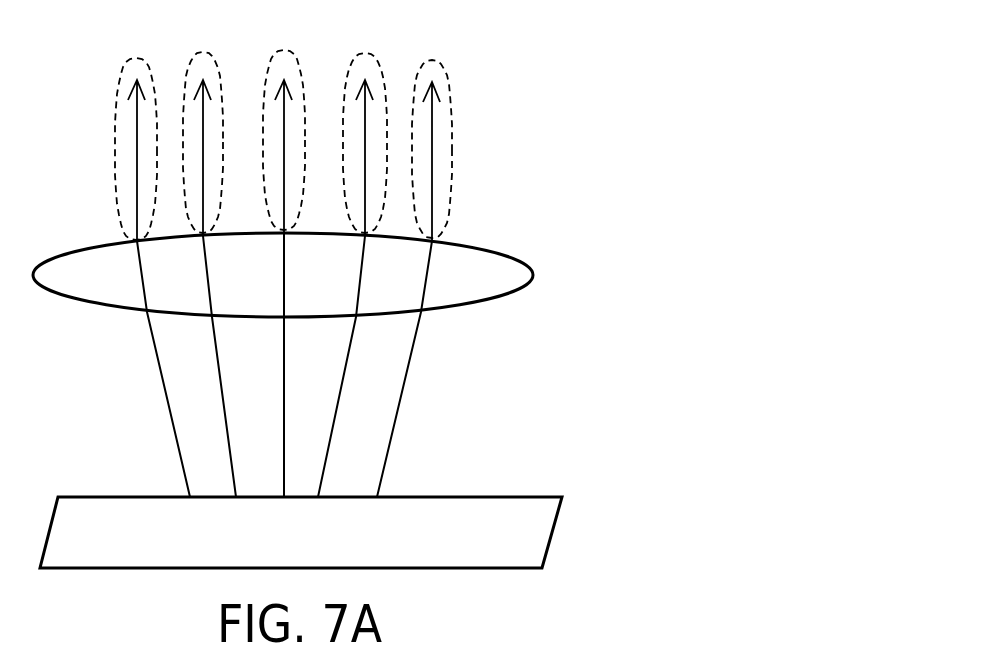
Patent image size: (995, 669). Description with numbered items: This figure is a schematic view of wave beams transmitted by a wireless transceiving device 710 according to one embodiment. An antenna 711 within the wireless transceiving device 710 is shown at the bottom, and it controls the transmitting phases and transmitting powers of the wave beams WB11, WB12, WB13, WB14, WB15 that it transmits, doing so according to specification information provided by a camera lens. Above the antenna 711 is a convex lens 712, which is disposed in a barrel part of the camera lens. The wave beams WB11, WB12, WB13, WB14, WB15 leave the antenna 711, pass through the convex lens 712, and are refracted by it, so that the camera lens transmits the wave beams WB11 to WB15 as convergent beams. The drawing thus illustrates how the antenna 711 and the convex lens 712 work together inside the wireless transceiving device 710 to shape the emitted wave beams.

The wave beam WB11 is at (117, 82).
The wave beam WB12 is at (217, 83).
The wave beam WB13 is at (300, 82).
The wave beam WB14 is at (382, 83).
The wave beam WB15 is at (448, 85).
The wireless transceiving device 710 is at (366, 412).
The antenna 711 is at (554, 533).
The convex lens 712 is at (535, 273).